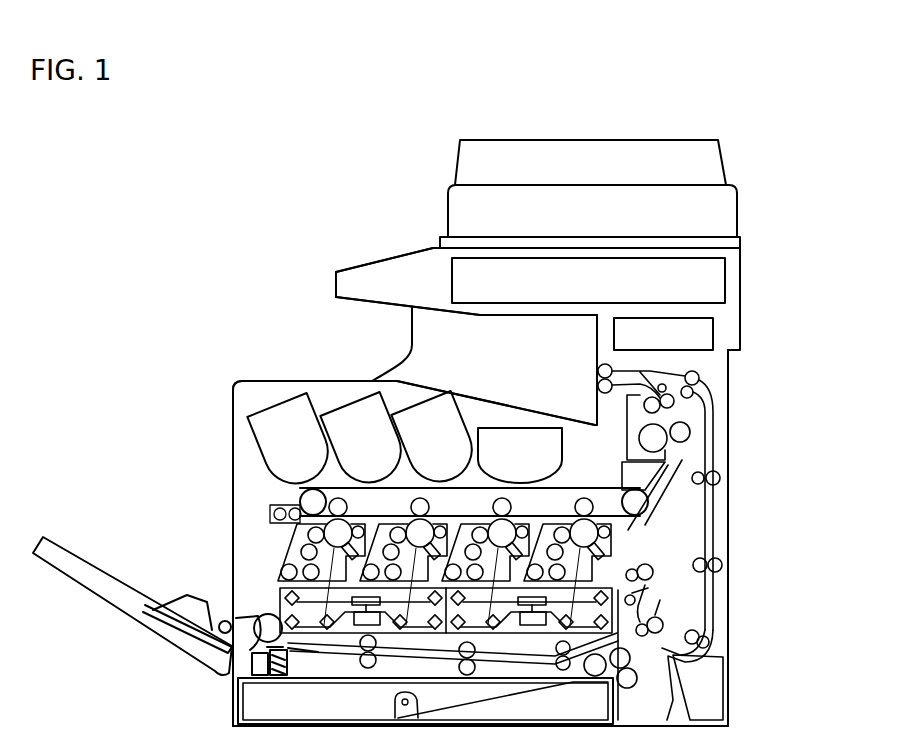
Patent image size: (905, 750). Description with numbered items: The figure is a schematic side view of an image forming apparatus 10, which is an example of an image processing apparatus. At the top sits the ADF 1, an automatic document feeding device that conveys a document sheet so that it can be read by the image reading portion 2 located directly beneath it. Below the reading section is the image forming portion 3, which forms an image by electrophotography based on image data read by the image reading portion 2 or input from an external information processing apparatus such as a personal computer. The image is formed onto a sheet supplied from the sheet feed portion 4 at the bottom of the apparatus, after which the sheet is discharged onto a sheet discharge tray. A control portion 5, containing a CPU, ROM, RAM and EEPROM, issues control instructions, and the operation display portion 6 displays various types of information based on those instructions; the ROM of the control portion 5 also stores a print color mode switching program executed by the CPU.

The image forming apparatus 10 is at (236, 242).
The ADF 1 is at (733, 172).
The image reading portion 2 is at (733, 283).
The image forming portion 3 is at (259, 472).
The sheet feed portion 4 is at (238, 701).
The control portion 5 is at (725, 333).
The operation display portion 6 is at (372, 260).